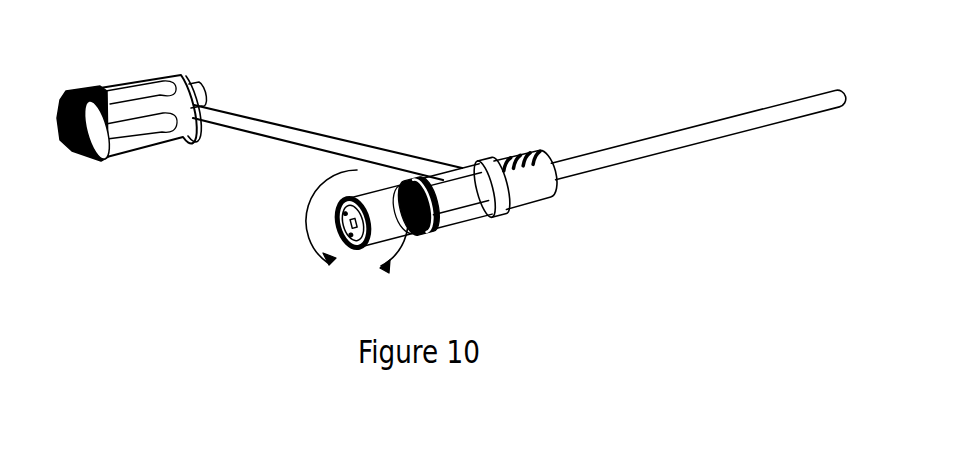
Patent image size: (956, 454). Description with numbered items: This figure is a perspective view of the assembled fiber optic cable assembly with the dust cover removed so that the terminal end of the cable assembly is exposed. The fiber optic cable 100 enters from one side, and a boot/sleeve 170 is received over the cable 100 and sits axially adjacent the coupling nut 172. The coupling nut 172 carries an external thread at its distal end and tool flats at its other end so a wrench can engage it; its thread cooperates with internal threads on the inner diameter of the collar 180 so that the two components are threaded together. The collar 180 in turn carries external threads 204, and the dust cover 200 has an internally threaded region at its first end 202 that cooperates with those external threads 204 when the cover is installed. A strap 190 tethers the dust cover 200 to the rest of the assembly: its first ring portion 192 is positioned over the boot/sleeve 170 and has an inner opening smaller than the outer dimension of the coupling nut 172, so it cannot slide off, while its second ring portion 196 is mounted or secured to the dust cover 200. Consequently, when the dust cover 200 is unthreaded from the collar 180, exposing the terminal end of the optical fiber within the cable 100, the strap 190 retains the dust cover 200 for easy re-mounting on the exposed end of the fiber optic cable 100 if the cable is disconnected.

The fiber optic cable 100 is at (703, 133).
The boot/sleeve 170 is at (522, 150).
The coupling nut 172 is at (467, 210).
The collar 180 is at (381, 247).
The strap 190 is at (313, 135).
The first ring portion 192 is at (509, 210).
The second ring portion 196 is at (187, 128).
The dust cover 200 is at (123, 77).
The first end 202 is at (80, 157).
The external threads 204 is at (425, 242).